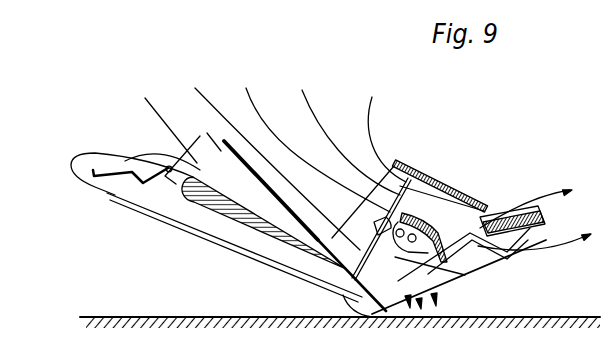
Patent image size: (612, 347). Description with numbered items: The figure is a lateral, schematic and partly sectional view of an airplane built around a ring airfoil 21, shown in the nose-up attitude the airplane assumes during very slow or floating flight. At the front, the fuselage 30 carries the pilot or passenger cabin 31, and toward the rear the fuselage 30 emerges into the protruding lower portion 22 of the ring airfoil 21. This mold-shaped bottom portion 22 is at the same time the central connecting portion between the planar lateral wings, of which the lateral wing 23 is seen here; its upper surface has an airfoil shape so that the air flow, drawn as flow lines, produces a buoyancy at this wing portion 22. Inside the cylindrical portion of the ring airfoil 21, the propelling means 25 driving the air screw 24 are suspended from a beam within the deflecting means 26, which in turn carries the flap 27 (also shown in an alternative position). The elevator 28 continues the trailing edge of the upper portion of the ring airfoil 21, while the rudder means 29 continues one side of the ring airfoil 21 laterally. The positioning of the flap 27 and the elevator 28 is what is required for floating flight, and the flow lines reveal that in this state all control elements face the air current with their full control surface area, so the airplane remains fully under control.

The ring airfoil 21 is at (433, 177).
The protruding lower portion 22 is at (220, 207).
The lateral wing 23 is at (288, 210).
The air screw 24 is at (404, 172).
The propelling means 25 is at (437, 301).
The deflecting means 26 is at (420, 228).
The flap 27 is at (436, 262).
The elevator 28 is at (523, 210).
The rudder means 29 is at (490, 254).
The fuselage 30 is at (145, 202).
The pilot or passenger cabin 31 is at (148, 160).